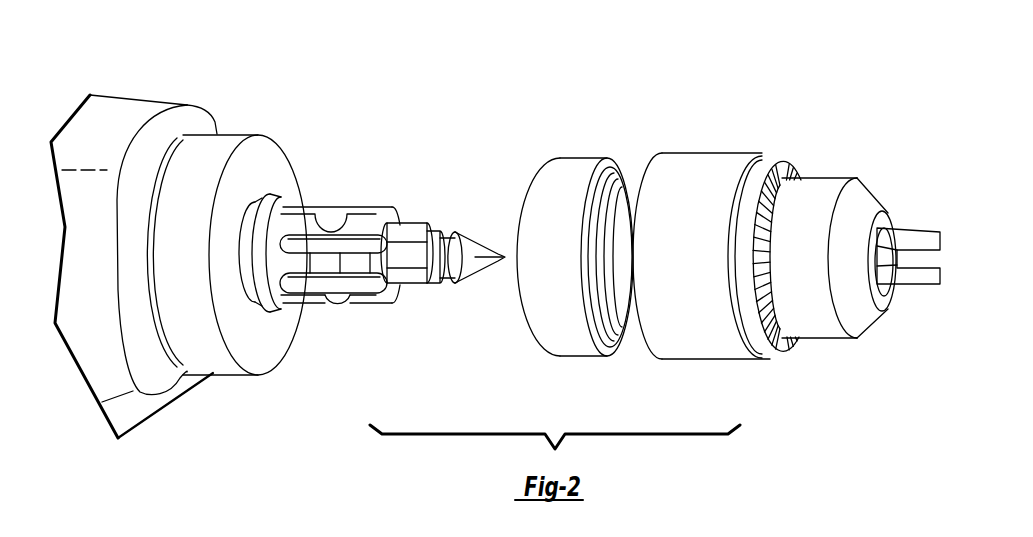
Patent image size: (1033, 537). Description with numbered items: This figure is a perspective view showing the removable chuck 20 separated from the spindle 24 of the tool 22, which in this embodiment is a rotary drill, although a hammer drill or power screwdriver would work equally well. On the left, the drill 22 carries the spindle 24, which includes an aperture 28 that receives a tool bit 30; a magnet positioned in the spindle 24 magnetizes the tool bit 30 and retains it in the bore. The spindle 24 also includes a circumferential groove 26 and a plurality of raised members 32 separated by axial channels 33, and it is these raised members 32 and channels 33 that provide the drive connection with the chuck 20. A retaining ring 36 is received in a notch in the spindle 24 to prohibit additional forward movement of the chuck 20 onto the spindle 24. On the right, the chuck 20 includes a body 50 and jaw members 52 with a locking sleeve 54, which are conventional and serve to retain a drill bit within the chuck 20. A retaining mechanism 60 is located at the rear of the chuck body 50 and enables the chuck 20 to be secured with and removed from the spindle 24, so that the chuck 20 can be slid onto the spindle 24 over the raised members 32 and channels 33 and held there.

The removable chuck 20 is at (772, 95).
The tool 22 is at (224, 101).
The spindle 24 is at (314, 197).
The circumferential groove 26 is at (337, 300).
The aperture 28 is at (422, 284).
The tool bit 30 is at (420, 218).
The raised members 32 is at (392, 213).
The axial channels 33 is at (373, 279).
The retaining ring 36 is at (286, 306).
The body 50 is at (796, 167).
The jaw members 52 is at (902, 238).
The locking sleeve 54 is at (695, 153).
The retaining mechanism 60 is at (577, 155).